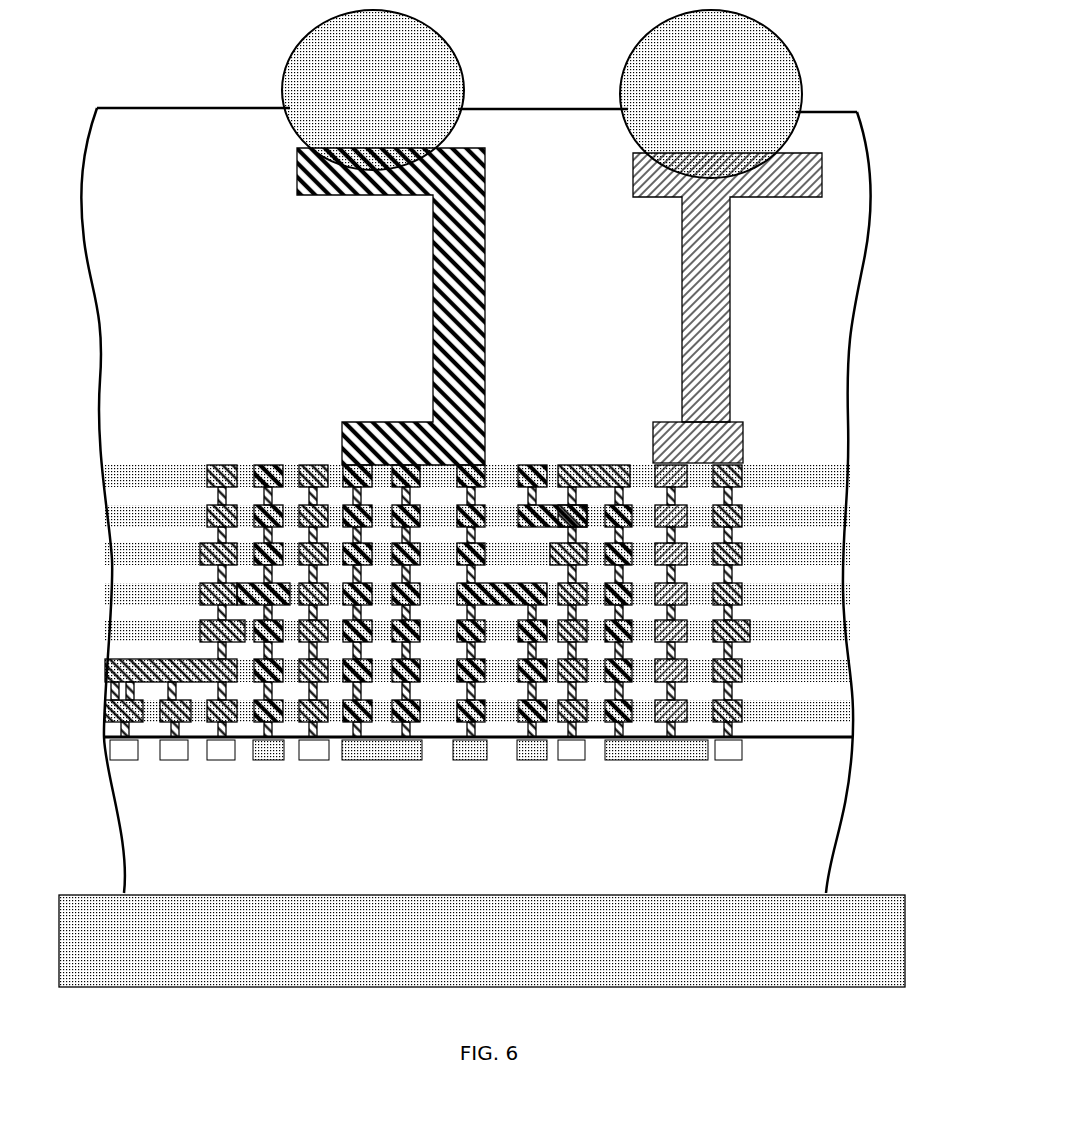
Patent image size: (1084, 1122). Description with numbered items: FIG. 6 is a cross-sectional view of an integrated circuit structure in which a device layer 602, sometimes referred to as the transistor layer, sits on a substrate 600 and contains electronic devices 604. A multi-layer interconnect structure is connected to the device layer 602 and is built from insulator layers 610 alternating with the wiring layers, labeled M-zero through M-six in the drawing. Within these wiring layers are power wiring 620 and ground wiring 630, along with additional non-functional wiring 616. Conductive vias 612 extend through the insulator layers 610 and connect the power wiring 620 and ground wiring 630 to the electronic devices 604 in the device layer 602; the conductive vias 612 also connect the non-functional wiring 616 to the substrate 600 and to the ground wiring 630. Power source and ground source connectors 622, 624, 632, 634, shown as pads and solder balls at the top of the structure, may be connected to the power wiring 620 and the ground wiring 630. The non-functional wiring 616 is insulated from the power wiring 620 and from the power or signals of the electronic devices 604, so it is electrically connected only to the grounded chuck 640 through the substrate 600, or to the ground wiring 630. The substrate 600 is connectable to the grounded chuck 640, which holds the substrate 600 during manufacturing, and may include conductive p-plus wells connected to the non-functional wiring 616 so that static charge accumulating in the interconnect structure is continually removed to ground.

The substrate 600 is at (780, 842).
The device layer 602 is at (758, 749).
The electronic devices 604 is at (268, 762).
The insulator layers 610 is at (815, 732).
The conductive vias 612 is at (260, 650).
The non-functional wiring 616 is at (223, 462).
The power wiring 620 is at (270, 463).
The power source connector 622 is at (432, 305).
The power source connector 624 is at (466, 92).
The ground wiring 630 is at (665, 462).
The ground source connector 632 is at (684, 325).
The ground source connector 634 is at (806, 93).
The grounded chuck 640 is at (812, 943).